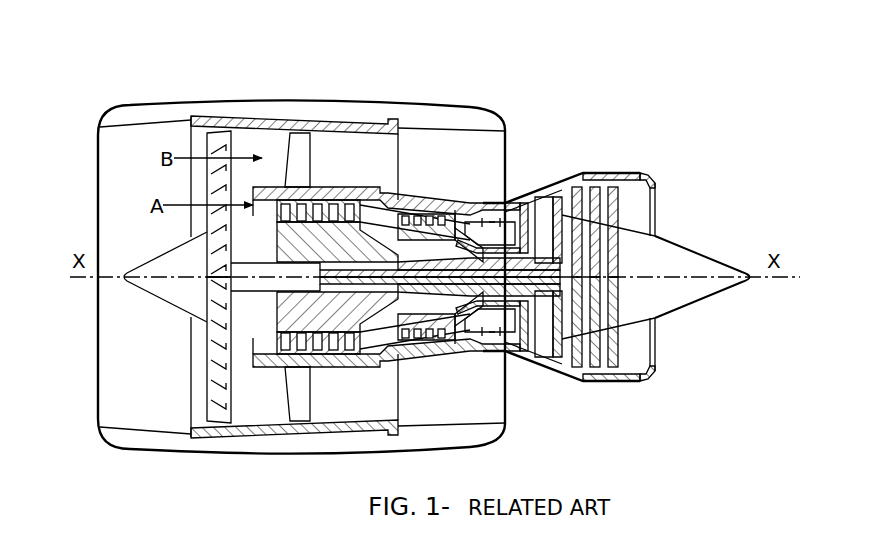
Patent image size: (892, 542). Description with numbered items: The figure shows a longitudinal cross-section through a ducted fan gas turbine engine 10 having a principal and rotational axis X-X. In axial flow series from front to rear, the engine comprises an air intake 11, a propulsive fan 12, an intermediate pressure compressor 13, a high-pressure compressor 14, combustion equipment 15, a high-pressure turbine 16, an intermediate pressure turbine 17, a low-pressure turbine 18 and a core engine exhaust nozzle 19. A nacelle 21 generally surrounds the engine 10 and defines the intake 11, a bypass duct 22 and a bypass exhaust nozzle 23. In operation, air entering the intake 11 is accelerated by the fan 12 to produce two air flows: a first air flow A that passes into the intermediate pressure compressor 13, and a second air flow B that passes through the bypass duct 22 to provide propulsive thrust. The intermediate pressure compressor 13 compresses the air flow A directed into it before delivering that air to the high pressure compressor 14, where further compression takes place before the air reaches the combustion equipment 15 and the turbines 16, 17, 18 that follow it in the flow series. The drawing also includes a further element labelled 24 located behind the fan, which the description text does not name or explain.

The ducted fan gas turbine engine 10 is at (137, 69).
The air intake 11 is at (142, 127).
The propulsive fan 12 is at (207, 382).
The intermediate pressure compressor 13 is at (330, 352).
The high-pressure compressor 14 is at (427, 217).
The combustion equipment 15 is at (477, 338).
The high-pressure turbine 16 is at (523, 348).
The intermediate pressure turbine 17 is at (553, 190).
The low-pressure turbine 18 is at (563, 372).
The core engine exhaust nozzle 19 is at (647, 175).
The nacelle 21 is at (335, 110).
The bypass duct 22 is at (466, 166).
The bypass exhaust nozzle 23 is at (503, 122).
The outlet guide vane 24 is at (295, 393).